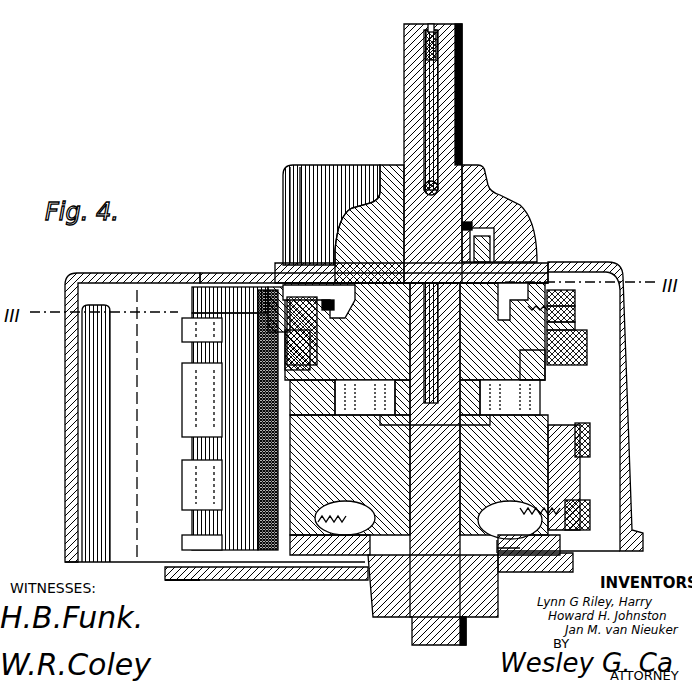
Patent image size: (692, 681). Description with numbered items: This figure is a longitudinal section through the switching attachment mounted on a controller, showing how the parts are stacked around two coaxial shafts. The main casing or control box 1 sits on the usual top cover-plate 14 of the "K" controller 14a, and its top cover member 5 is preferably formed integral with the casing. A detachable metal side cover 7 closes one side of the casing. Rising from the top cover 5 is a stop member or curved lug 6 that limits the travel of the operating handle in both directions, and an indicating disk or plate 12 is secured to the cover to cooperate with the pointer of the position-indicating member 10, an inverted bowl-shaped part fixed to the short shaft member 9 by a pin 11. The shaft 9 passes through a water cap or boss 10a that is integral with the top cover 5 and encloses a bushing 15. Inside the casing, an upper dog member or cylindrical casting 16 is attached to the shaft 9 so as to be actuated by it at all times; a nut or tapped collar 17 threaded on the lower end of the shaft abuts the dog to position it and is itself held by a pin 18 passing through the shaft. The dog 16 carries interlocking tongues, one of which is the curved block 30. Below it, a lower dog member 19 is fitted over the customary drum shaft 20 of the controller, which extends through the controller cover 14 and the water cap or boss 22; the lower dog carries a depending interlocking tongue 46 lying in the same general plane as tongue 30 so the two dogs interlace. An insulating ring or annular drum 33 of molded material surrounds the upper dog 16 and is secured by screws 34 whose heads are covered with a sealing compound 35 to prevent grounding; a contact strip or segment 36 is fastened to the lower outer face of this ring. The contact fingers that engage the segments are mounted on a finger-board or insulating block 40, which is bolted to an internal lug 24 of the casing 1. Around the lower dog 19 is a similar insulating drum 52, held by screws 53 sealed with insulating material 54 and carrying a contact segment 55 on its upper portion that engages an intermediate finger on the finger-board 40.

The main casing 1 is at (628, 432).
The top cover member 5 is at (200, 275).
The stop member 6 is at (283, 192).
The side cover 7 is at (66, 392).
The shaft member 9 is at (403, 100).
The position-indicating member 10 is at (506, 215).
The water cap 10a is at (492, 240).
The pin 11 is at (466, 163).
The indicating disk 12 is at (545, 265).
The top cover-plate 14 is at (300, 582).
The K controller 14a is at (315, 645).
The bushing 15 is at (470, 226).
The dog member 16 is at (530, 355).
The nut 17 is at (478, 398).
The pin 18 is at (395, 392).
The lower dog member 19 is at (510, 520).
The drum shaft 20 is at (414, 640).
The water cap 22 is at (515, 549).
The internal lug 24 is at (230, 297).
The interlocking tongue 30 is at (338, 402).
The insulating ring 33 is at (575, 364).
The screws 34 is at (570, 300).
The sealing compound 35 is at (570, 318).
The contact segment 36 is at (285, 368).
The finger-board 40 is at (182, 400).
The interlocking tongue 46 is at (522, 385).
The insulating drum 52 is at (582, 484).
The screws 53 is at (314, 530).
The insulating material 54 is at (585, 518).
The contact segment 55 is at (582, 441).